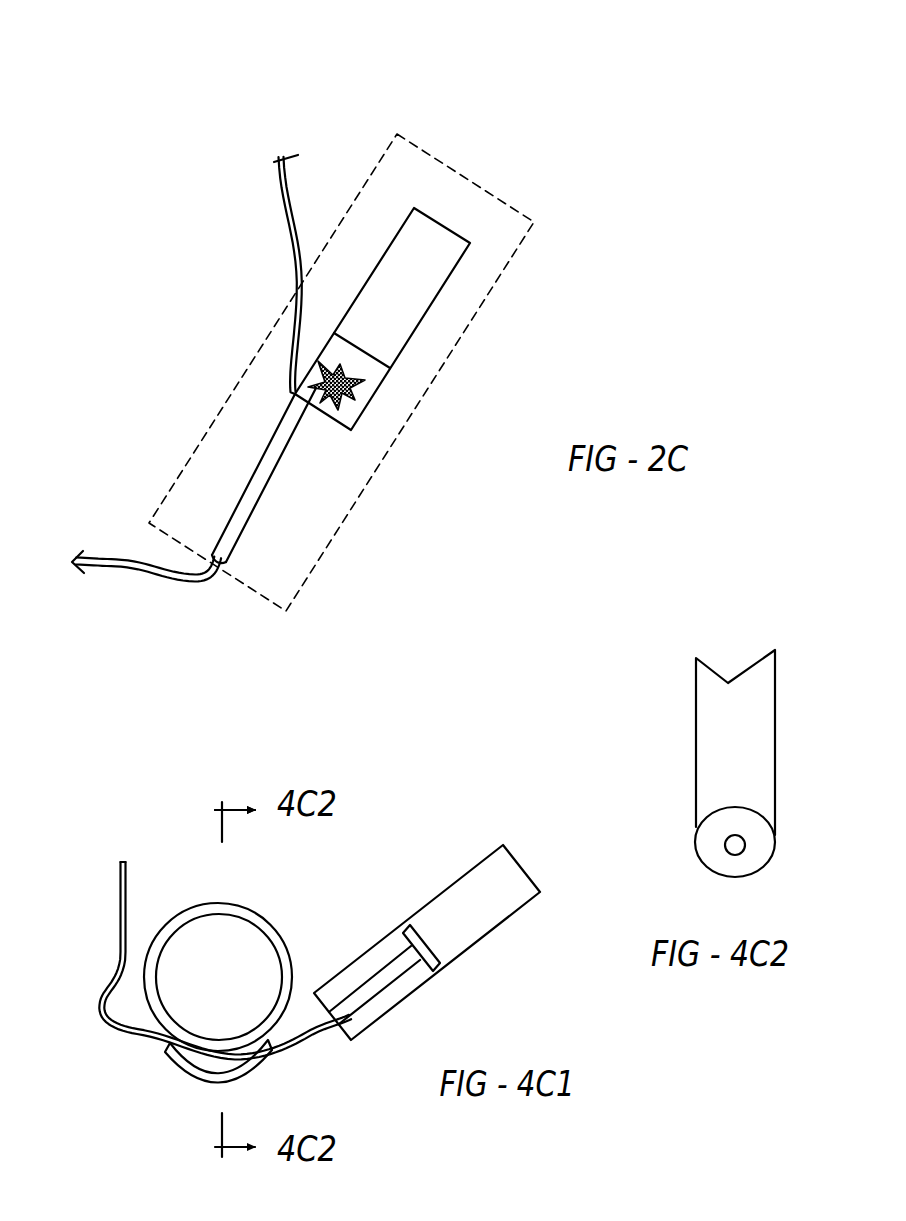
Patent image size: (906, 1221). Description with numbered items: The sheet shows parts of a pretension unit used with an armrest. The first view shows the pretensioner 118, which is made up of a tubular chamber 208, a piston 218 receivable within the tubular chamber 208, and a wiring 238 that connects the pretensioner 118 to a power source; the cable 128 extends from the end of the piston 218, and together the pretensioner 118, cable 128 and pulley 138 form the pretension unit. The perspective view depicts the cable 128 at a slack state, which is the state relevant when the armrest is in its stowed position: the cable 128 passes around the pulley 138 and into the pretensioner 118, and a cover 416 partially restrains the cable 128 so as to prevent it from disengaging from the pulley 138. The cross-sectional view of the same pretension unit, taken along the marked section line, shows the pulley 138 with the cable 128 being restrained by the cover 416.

In FIG. 2C, the pretensioner 118 is at (392, 141).
In FIG. 4C1, the pretensioner 118 is at (508, 918).
In FIG. 2C, the cable 128 is at (164, 586).
In FIG. 4C1, the cable 128 is at (94, 1013).
In FIG. 4C2, the cable 128 is at (722, 833).
In FIG. 4C1, the pulley 138 is at (281, 912).
In FIG. 4C2, the pulley 138 is at (723, 722).
In FIG. 2C, the tubular chamber 208 is at (411, 300).
In FIG. 2C, the piston 218 is at (287, 472).
In FIG. 2C, the wiring 238 is at (279, 160).
In FIG. 4C1, the cover 416 is at (195, 1078).
In FIG. 4C2, the cover 416 is at (717, 872).